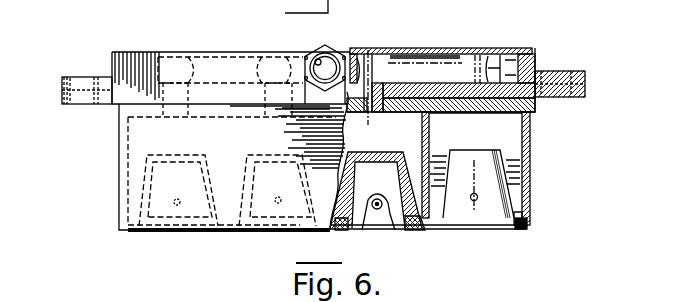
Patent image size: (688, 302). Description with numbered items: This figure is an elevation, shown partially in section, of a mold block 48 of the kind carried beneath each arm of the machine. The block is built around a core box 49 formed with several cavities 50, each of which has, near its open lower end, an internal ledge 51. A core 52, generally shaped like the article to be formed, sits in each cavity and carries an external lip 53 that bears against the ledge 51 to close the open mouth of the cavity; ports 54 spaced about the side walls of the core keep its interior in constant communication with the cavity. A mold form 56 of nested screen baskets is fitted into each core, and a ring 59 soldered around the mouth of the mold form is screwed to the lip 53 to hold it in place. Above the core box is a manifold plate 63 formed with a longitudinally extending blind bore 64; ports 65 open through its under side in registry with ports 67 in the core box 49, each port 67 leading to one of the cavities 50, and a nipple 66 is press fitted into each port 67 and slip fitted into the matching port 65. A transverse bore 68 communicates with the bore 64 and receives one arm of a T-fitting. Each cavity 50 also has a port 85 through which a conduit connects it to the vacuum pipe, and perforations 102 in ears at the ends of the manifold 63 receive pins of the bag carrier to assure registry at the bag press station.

The mold block 48 is at (567, 41).
The perforations 102 is at (80, 88).
The transverse bore 68 is at (312, 57).
The manifold plate 63 is at (431, 48).
The blind bore 64 is at (402, 56).
The nipple 66 is at (372, 52).
The port 67 is at (375, 112).
The ports 65 is at (490, 58).
The core box 49 is at (530, 121).
The cavities 50 is at (132, 148).
The core 52 is at (147, 190).
The ports 54 is at (409, 200).
The port 85 is at (377, 209).
The ring 59 is at (342, 232).
The mold form 56 is at (403, 222).
The internal ledge 51 is at (523, 213).
The external lip 53 is at (525, 228).